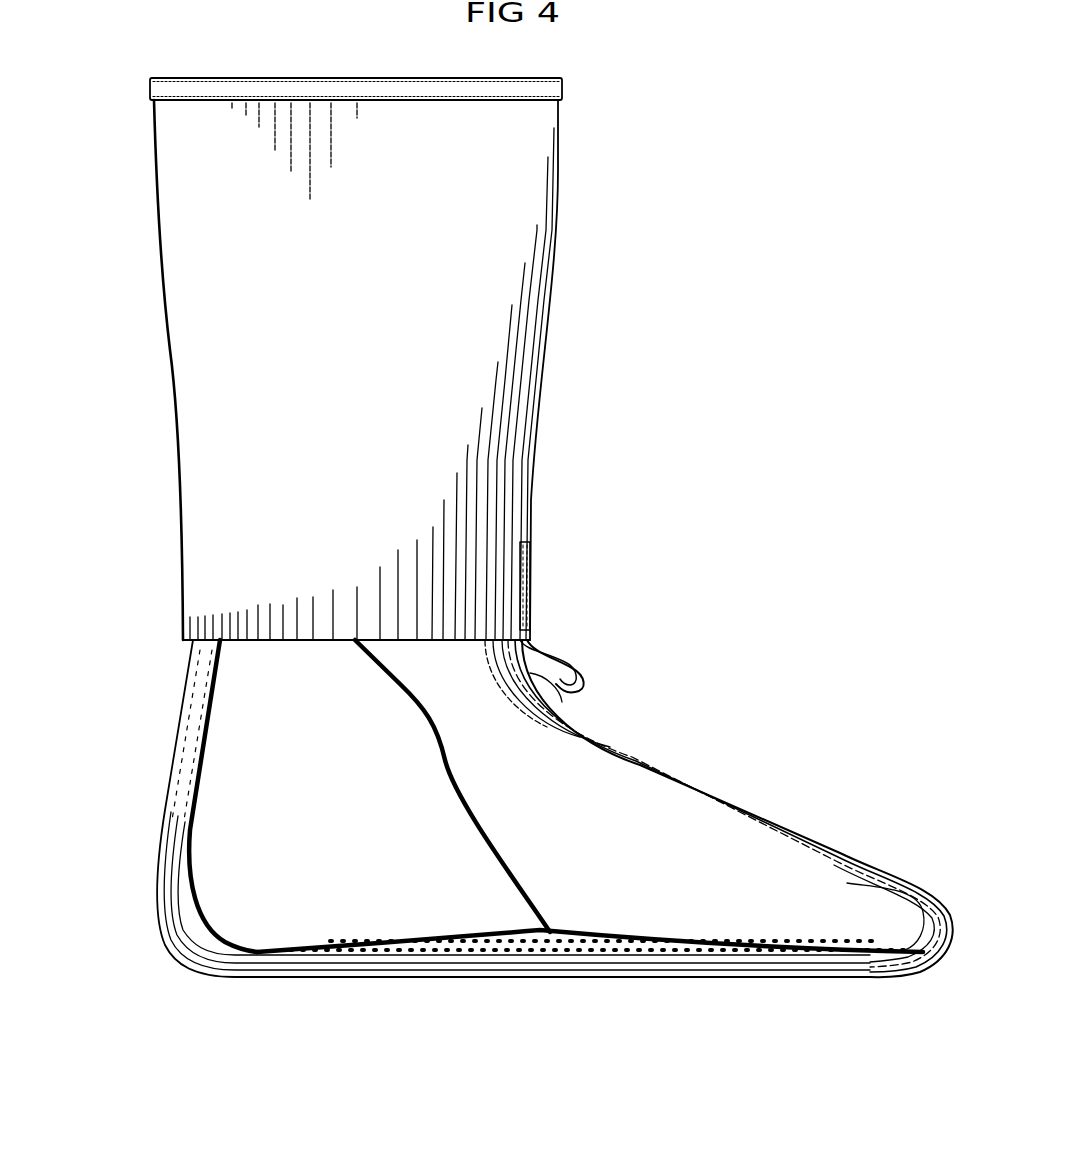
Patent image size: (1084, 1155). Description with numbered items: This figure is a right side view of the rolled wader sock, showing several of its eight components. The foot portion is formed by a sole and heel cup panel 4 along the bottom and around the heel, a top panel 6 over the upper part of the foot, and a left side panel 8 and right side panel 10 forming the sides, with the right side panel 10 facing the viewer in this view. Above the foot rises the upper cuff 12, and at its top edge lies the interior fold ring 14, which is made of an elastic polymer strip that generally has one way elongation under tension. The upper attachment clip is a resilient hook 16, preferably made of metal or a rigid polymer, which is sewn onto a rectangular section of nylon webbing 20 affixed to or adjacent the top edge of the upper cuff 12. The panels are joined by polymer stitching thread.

The sole and heel cup panel 4 is at (197, 952).
The top panel 6 is at (715, 815).
The left side panel 8 is at (400, 915).
The right side panel 10 is at (430, 725).
The upper cuff 12 is at (528, 195).
The interior fold ring 14 is at (562, 90).
The resilient hook 16 is at (562, 668).
The nylon webbing 20 is at (526, 582).